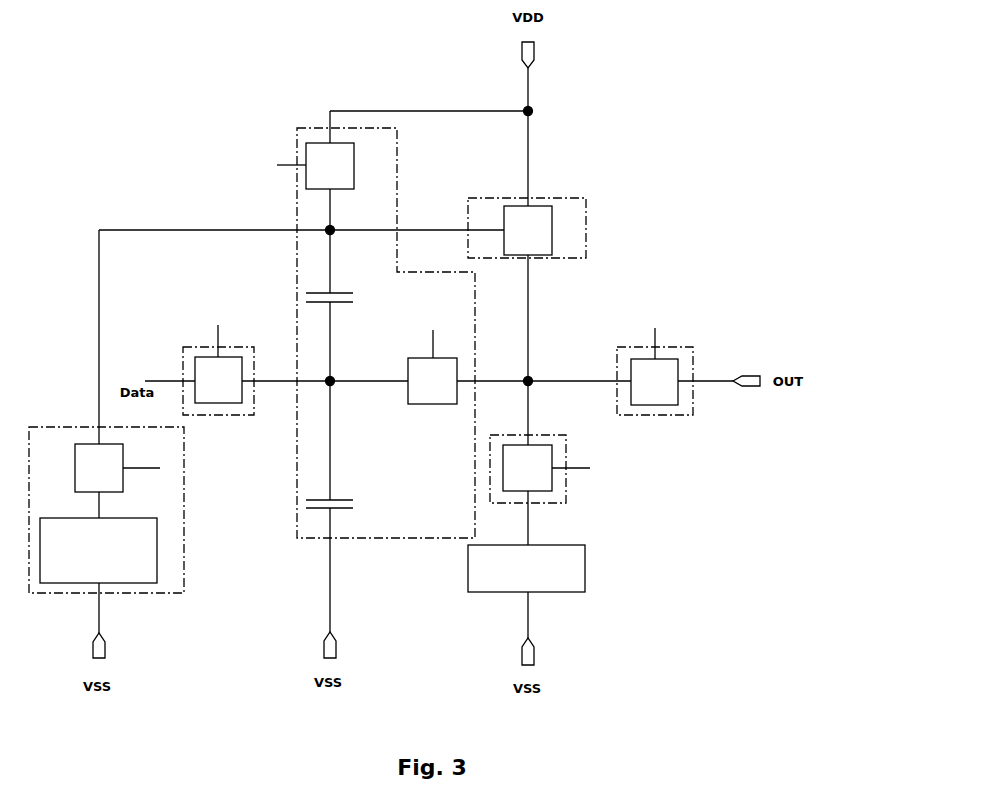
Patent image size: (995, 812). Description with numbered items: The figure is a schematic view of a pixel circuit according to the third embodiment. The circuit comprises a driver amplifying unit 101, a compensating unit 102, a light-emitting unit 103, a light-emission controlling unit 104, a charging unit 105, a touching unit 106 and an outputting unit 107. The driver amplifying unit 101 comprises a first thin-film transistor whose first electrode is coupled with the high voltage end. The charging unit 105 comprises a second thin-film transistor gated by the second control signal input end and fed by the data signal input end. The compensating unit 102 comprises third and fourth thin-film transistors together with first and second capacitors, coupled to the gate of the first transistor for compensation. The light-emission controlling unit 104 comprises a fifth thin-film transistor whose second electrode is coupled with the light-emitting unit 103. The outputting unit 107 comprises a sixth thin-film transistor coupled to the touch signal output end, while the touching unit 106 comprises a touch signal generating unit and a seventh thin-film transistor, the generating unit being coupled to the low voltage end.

The driver amplifying unit 101 is at (586, 232).
The compensating unit 102 is at (397, 178).
The light-emitting unit 103 is at (585, 568).
The light-emission controlling unit 104 is at (566, 450).
The charging unit 105 is at (233, 347).
The touching unit 106 is at (184, 508).
The outputting unit 107 is at (684, 347).